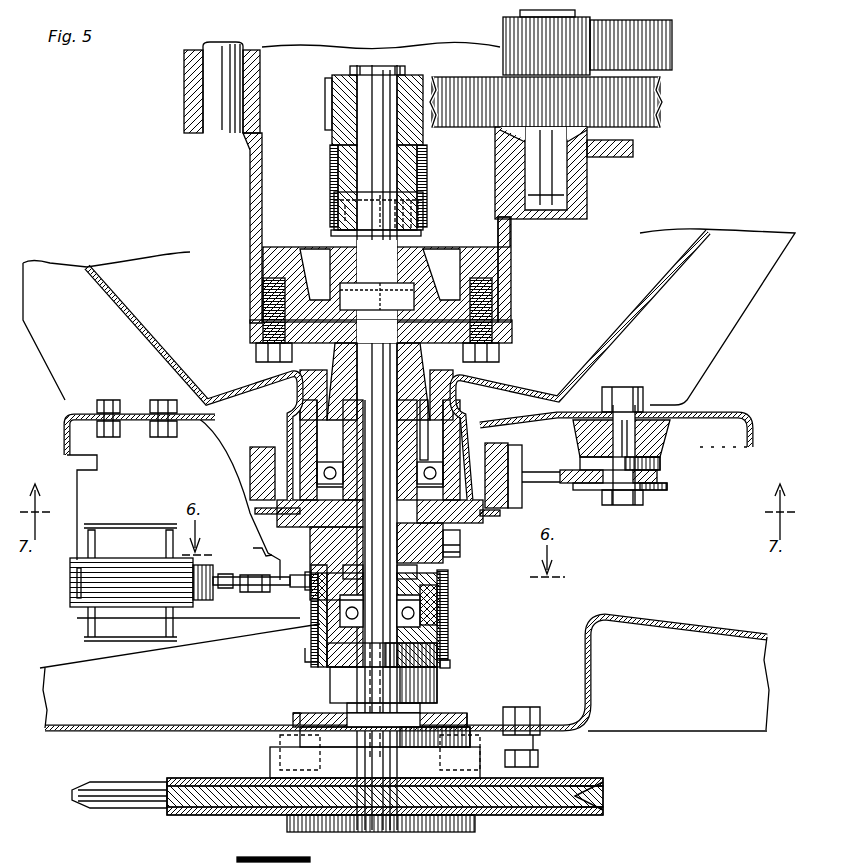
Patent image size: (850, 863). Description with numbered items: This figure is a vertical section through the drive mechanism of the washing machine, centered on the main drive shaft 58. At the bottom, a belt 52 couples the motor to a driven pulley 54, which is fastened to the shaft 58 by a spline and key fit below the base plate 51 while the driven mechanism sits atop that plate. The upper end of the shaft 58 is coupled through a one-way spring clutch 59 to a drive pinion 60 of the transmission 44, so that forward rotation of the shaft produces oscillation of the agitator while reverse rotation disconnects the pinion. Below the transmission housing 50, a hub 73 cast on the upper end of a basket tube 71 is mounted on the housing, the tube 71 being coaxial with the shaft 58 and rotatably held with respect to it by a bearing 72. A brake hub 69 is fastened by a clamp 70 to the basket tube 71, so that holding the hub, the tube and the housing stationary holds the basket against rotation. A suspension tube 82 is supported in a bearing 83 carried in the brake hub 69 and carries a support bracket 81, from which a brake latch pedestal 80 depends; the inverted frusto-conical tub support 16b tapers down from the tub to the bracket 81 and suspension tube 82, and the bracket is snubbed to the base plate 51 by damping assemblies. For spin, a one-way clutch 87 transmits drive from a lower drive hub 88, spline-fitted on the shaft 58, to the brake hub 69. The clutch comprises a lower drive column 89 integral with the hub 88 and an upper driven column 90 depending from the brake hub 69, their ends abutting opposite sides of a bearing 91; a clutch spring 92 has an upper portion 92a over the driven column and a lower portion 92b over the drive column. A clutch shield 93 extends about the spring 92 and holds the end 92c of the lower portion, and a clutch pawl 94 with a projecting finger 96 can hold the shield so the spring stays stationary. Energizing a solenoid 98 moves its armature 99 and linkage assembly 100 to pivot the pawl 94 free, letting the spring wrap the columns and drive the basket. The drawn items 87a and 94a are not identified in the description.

The transmission 44 is at (680, 191).
The transmission housing 50 is at (512, 262).
The base plate 51 is at (648, 620).
The belt 52 is at (605, 797).
The driven pulley 54 is at (545, 814).
The main drive shaft 58 is at (381, 514).
The one-way spring clutch 59 is at (322, 176).
The drive pinion 60 is at (330, 95).
The brake hub 69 is at (310, 538).
The clamp 70 is at (462, 546).
The basket tube 71 is at (412, 462).
The bearing 72 is at (414, 448).
The hub 73 is at (512, 338).
The brake latch pedestal 80 is at (655, 460).
The support bracket 81 is at (740, 412).
The suspension tube 82 is at (453, 413).
The bearing 83 is at (334, 452).
The clutch 87 is at (472, 644).
The bracket 87a is at (222, 458).
The lower drive hub 88 is at (440, 689).
The lower drive column 89 is at (445, 615).
The upper driven column 90 is at (450, 583).
The bearing 91 is at (373, 613).
The clutch spring 92 is at (323, 670).
The upper spring portion 92a is at (347, 582).
The lower spring portion 92b is at (351, 682).
The spring end 92c is at (451, 664).
The clutch shield 93 is at (312, 655).
The clutch pawl 94 is at (294, 608).
The link arm 94a is at (258, 545).
The projecting finger 96 is at (302, 576).
The solenoid 98 is at (122, 525).
The armature 99 is at (207, 600).
The linkage assembly 100 is at (244, 566).
The tub support 16b is at (665, 288).